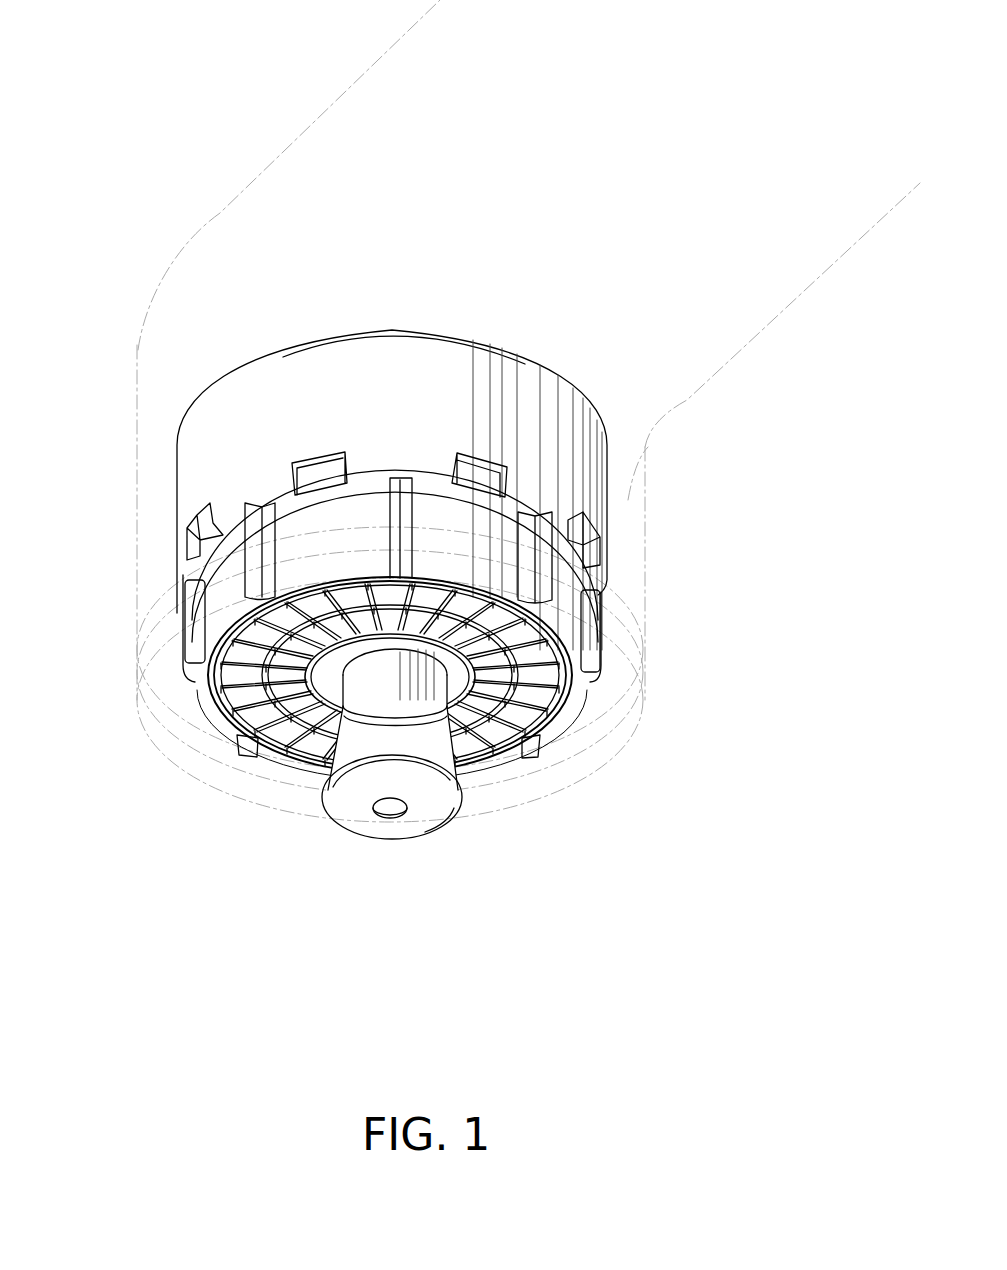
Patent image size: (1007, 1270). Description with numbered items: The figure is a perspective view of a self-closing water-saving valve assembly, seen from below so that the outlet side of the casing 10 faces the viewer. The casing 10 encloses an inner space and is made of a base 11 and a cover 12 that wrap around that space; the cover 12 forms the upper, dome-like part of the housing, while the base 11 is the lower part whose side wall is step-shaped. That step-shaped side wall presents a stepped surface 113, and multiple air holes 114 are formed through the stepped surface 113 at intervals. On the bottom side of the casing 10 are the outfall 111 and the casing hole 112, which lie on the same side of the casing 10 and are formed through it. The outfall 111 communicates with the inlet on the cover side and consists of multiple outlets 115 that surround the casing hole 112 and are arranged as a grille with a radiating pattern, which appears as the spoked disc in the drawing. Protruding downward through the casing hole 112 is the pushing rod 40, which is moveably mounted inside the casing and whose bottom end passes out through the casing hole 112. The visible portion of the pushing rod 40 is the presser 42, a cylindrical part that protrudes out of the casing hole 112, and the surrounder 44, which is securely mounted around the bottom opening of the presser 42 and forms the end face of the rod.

The casing 10 is at (134, 532).
The base 11 is at (177, 640).
The cover 12 is at (168, 446).
The outfall 111 is at (283, 747).
The casing hole 112 is at (443, 677).
The stepped surface 113 is at (520, 497).
The air holes 114 is at (470, 467).
The outlets 115 is at (245, 705).
The pushing rod 40 is at (479, 753).
The presser 42 is at (427, 703).
The surrounder 44 is at (443, 800).